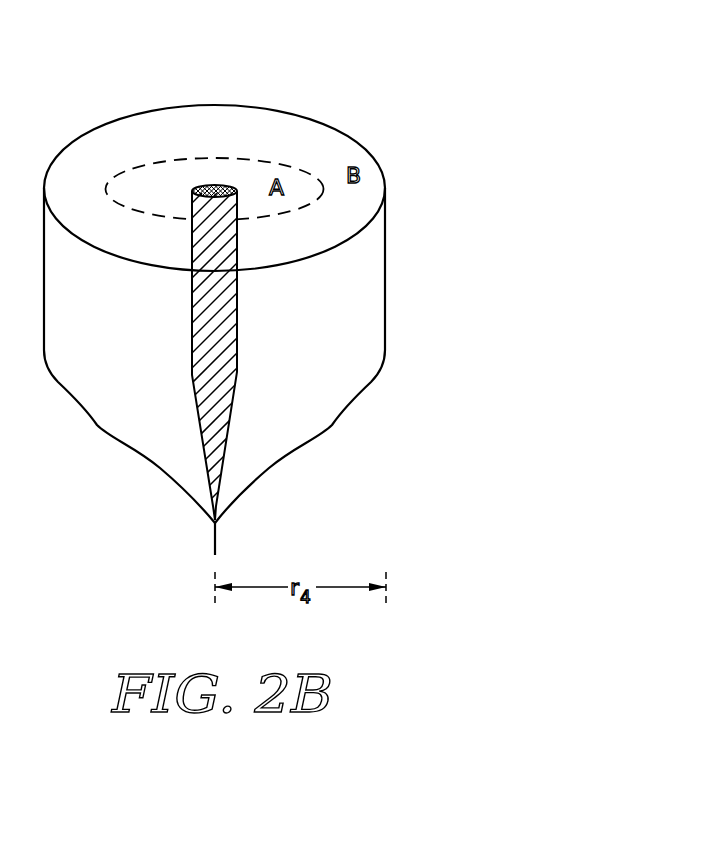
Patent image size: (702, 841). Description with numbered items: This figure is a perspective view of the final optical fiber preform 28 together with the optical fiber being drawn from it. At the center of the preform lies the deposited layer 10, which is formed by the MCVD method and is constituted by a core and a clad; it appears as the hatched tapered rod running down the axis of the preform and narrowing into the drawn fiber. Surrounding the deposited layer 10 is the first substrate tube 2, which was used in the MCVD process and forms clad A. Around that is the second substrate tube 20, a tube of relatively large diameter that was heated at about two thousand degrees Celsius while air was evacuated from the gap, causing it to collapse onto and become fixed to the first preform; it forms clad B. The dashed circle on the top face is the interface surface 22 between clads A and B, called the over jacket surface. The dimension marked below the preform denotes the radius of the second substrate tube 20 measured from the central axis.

The final optical fiber preform 28 is at (423, 106).
The second substrate tube 20 is at (214, 330).
The interface surface 22 is at (211, 158).
The deposited layer 10 is at (223, 344).
The first substrate tube 2 is at (178, 194).